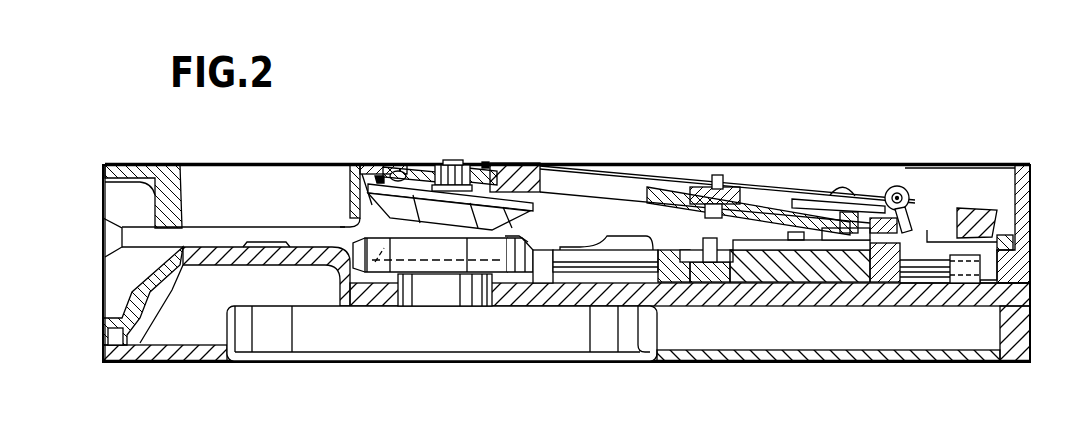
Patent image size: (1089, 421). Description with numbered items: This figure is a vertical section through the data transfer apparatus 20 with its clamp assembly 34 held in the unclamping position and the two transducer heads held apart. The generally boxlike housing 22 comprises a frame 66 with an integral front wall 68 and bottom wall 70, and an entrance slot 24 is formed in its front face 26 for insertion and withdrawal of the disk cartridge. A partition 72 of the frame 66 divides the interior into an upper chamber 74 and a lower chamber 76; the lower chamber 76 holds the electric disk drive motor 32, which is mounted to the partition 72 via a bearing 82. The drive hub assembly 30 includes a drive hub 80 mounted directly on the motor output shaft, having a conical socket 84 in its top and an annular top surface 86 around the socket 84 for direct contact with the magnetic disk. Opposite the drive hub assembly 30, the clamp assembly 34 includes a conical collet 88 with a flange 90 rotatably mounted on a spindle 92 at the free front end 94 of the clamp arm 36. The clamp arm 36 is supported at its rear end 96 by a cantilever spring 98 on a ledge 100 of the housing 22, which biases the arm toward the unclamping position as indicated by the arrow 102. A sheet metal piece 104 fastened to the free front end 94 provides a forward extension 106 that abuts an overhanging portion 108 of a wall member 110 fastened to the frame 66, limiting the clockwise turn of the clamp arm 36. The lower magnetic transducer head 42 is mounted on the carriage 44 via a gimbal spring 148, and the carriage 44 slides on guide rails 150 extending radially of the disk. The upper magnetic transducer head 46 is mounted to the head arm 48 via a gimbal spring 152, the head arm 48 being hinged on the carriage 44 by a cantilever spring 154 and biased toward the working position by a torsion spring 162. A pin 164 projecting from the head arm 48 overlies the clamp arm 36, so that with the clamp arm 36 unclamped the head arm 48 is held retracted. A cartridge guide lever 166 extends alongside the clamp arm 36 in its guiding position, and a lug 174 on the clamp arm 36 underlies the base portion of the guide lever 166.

The data transfer apparatus 20 is at (133, 161).
The housing 22 is at (1030, 200).
The entrance slot 24 is at (108, 237).
The front face 26 is at (100, 268).
The drive hub assembly 30 is at (537, 242).
The disk drive motor 32 is at (545, 350).
The clamp assembly 34 is at (383, 176).
The clamp arm 36 is at (658, 178).
The lower magnetic transducer head 42 is at (702, 240).
The carriage 44 is at (829, 283).
The upper magnetic transducer head 46 is at (748, 200).
The head arm 48 is at (783, 210).
The frame 66 is at (1023, 330).
The front wall 68 is at (103, 172).
The bottom wall 70 is at (205, 358).
The partition 72 is at (771, 300).
The upper chamber 74 is at (995, 168).
The lower chamber 76 is at (992, 343).
The drive hub 80 is at (343, 259).
The bearing 82 is at (440, 298).
The conical socket 84 is at (513, 236).
The annular top surface 86 is at (350, 223).
The conical collet 88 is at (378, 200).
The flange 90 is at (366, 164).
The spindle 92 is at (453, 160).
The free front end 94 is at (520, 176).
The rear end 96 is at (970, 206).
The cantilever spring 98 is at (1030, 257).
The ledge 100 is at (1028, 272).
The arrow 102 is at (612, 158).
The sheet metal piece 104 is at (485, 162).
The forward extension 106 is at (400, 172).
The overhanging portion 108 is at (401, 172).
The wall member 110 is at (166, 164).
The gimbal spring 148 is at (712, 282).
The guide rails 150 is at (934, 283).
The gimbal spring 152 is at (740, 190).
The cantilever spring 154 is at (903, 220).
The torsion spring 162 is at (865, 203).
The pin 164 is at (716, 175).
The cartridge guide lever 166 is at (613, 246).
The lug 174 is at (850, 189).